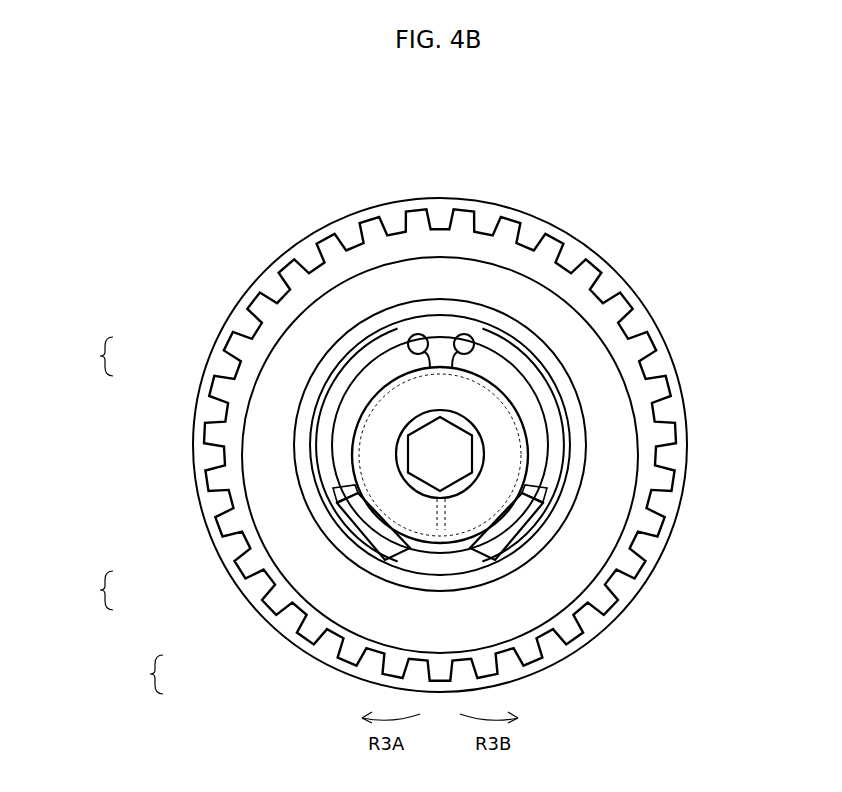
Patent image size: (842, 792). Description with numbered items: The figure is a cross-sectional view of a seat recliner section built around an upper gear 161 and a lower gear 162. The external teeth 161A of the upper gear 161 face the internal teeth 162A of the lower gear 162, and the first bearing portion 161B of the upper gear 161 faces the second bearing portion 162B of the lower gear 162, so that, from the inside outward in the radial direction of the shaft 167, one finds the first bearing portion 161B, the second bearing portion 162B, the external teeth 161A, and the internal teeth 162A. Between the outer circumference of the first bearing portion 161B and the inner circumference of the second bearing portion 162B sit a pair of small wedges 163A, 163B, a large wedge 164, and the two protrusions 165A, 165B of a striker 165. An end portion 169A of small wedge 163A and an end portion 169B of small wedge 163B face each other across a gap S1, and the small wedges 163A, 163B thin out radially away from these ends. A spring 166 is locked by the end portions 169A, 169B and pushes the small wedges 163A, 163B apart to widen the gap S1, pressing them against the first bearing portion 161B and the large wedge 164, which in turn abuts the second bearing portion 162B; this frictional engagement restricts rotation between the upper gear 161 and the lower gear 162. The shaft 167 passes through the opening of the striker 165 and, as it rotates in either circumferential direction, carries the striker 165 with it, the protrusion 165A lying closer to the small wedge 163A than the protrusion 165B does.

The upper gear 161 is at (88, 590).
The external teeth 161A is at (258, 562).
The first bearing portion 161B is at (247, 546).
The lower gear 162 is at (88, 356).
The internal teeth 162A is at (223, 367).
The second bearing portion 162B is at (220, 381).
The small wedge 163A is at (303, 428).
The small wedge 163B is at (523, 398).
The large wedge 164 is at (555, 408).
The striker 165 is at (138, 674).
The protrusion 165A is at (367, 532).
The protrusion 165B is at (460, 550).
The spring 166 is at (410, 342).
The shaft 167 is at (453, 472).
The end portion 169A is at (357, 398).
The end portion 169B is at (473, 350).
The gap S1 is at (441, 334).